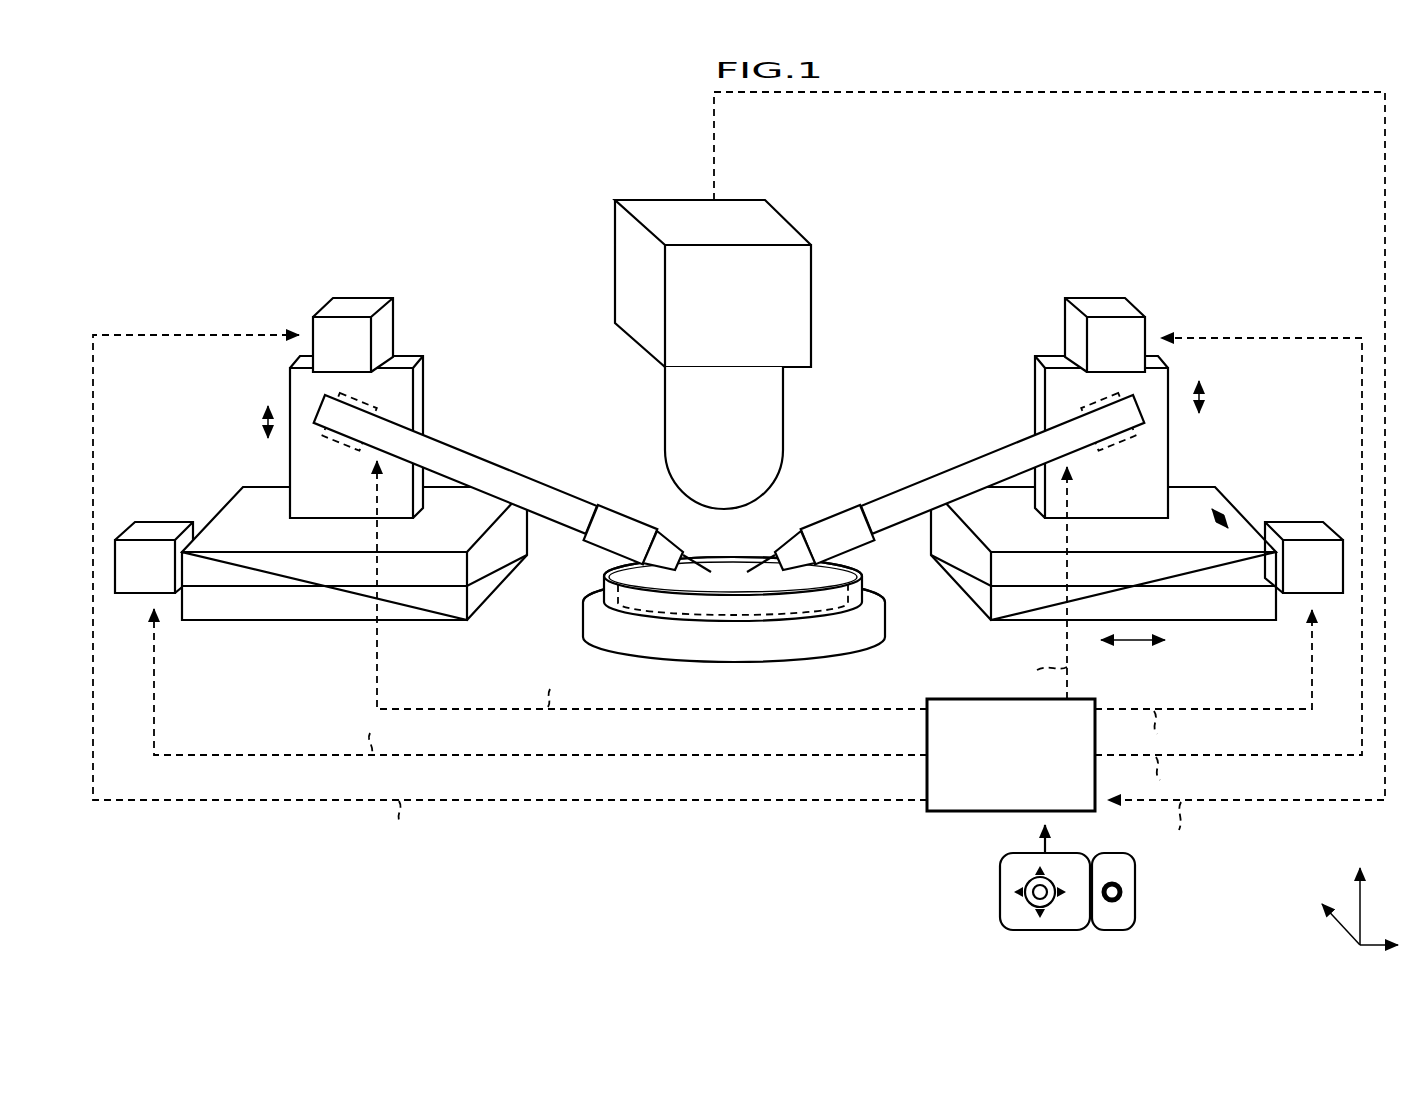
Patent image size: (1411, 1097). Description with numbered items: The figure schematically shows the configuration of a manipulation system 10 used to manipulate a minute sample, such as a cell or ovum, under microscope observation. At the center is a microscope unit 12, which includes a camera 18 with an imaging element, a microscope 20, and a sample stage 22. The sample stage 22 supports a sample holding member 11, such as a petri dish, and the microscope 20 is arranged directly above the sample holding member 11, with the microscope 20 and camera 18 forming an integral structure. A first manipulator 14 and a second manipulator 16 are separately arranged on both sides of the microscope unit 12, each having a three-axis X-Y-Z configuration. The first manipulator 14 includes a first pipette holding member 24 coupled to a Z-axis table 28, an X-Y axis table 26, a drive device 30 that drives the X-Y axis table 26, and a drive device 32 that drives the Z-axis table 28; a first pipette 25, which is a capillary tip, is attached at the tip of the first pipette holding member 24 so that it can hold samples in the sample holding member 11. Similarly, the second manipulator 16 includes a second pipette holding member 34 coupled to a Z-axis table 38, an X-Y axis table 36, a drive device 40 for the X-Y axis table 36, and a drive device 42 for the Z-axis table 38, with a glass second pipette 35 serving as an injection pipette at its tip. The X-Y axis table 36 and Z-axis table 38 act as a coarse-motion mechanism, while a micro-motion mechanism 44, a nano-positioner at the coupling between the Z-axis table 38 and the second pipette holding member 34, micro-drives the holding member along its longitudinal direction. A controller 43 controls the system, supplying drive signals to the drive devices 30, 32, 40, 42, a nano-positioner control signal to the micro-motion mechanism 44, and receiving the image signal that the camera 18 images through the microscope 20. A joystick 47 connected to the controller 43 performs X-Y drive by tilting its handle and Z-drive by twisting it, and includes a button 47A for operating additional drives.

The manipulation system 10 is at (752, 524).
The sample holding member 11 is at (740, 603).
The microscope unit 12 is at (668, 180).
The first manipulator 14 is at (290, 300).
The second manipulator 16 is at (1134, 264).
The camera 18 is at (811, 312).
The microscope 20 is at (783, 405).
The sample stage 22 is at (770, 663).
The first pipette holding member 24 is at (493, 483).
The first pipette 25 is at (686, 556).
The X-Y axis table 26 is at (294, 610).
The Z-axis table 28 is at (402, 383).
The drive device 30 is at (158, 552).
The drive device 32 is at (386, 327).
The second pipette holding member 34 is at (907, 515).
The second pipette 35 is at (757, 557).
The X-Y axis table 36 is at (1220, 610).
The Z-axis table 38 is at (1157, 445).
The drive device 40 is at (1313, 550).
The drive device 42 is at (1135, 328).
The controller 43 is at (957, 811).
The micro-motion mechanism 44 is at (1062, 396).
The joystick 47 is at (1012, 916).
The button 47A is at (1138, 892).